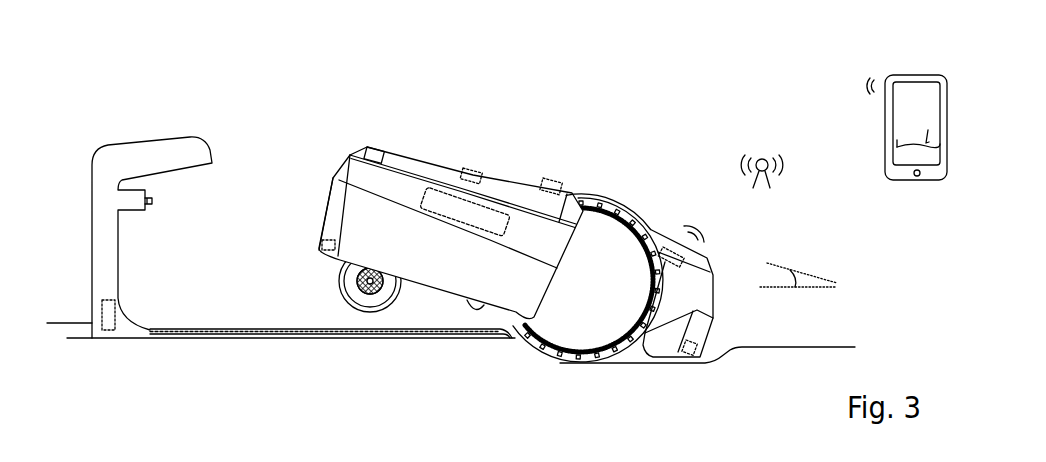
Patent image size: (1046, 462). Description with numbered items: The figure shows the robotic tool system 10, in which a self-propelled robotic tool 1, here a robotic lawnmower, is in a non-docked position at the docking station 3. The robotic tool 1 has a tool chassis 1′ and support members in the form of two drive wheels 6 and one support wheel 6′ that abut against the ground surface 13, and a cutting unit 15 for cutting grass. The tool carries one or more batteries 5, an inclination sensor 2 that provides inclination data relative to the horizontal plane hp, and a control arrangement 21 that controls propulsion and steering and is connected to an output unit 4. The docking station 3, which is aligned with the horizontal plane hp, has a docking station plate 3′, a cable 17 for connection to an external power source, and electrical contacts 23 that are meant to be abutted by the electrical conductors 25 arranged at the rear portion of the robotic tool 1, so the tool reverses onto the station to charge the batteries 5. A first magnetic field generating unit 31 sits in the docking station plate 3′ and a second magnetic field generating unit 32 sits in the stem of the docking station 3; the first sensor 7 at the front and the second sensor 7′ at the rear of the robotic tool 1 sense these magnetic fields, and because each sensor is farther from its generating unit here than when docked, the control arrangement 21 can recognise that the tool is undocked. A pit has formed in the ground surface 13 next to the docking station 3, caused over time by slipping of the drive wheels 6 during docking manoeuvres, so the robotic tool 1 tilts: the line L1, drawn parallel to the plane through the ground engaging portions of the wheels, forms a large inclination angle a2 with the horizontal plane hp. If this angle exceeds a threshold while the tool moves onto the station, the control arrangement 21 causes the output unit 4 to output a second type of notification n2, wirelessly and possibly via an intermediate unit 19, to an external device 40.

The self-propelled robotic tool 1 is at (603, 183).
The tool chassis 1′ is at (510, 183).
The inclination sensor 2 is at (478, 170).
The docking station 3 is at (105, 181).
The docking station plate 3′ is at (290, 330).
The output unit 4 is at (677, 245).
The battery 5 is at (445, 206).
The drive wheel 6 is at (578, 356).
The support wheel 6′ is at (392, 294).
The first sensor 7 is at (693, 358).
The second sensor 7′ is at (339, 248).
The robotic tool system 10 is at (207, 81).
The ground surface 13 is at (750, 348).
The cutting unit 15 is at (485, 305).
The cable 17 is at (60, 323).
The intermediate unit 19 is at (762, 157).
The control arrangement 21 is at (549, 180).
The electrical contacts 23 is at (150, 203).
The electrical conductors 25 is at (347, 172).
The first magnetic field generating unit 31 is at (372, 336).
The second magnetic field generating unit 32 is at (107, 332).
The external device 40 is at (937, 177).
The line L1 is at (764, 261).
The inclination angle a2 is at (789, 261).
The horizontal plane hp is at (777, 289).
The second type of notification n2 is at (884, 113).